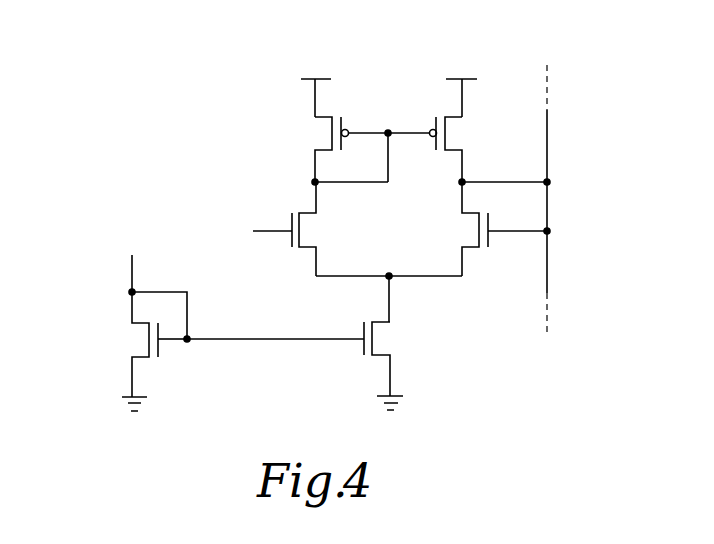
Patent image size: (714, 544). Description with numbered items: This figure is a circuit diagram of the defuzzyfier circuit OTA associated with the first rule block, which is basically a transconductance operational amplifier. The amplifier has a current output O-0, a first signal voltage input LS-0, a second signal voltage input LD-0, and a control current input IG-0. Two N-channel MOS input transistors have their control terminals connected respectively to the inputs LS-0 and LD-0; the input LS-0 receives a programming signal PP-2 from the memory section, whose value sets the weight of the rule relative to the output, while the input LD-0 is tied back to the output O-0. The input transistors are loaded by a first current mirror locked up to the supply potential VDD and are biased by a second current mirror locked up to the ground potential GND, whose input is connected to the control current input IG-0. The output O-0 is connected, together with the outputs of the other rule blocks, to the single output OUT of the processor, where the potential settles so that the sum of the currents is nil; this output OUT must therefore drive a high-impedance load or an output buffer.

The supply potential VDD is at (387, 86).
The programming signal PP-2 is at (257, 216).
The first signal voltage input LS-0 is at (271, 229).
The second signal voltage input LD-0 is at (506, 229).
The current output O-0 is at (506, 172).
The control current input IG-0 is at (150, 315).
The ground potential GND is at (113, 409).
The single output OUT is at (527, 198).